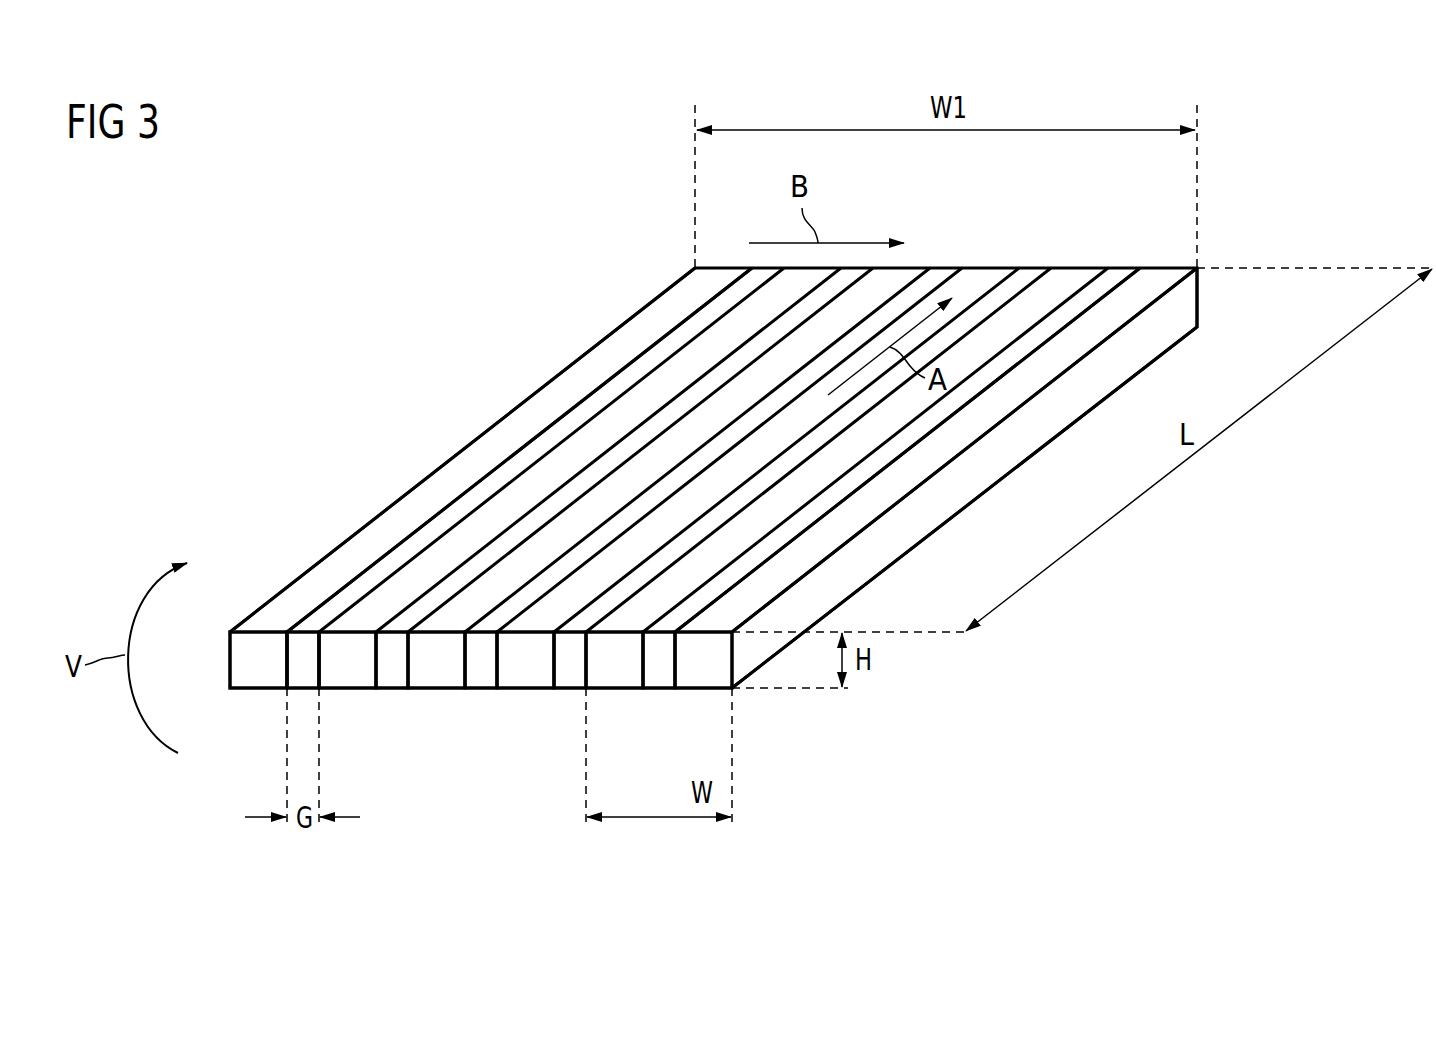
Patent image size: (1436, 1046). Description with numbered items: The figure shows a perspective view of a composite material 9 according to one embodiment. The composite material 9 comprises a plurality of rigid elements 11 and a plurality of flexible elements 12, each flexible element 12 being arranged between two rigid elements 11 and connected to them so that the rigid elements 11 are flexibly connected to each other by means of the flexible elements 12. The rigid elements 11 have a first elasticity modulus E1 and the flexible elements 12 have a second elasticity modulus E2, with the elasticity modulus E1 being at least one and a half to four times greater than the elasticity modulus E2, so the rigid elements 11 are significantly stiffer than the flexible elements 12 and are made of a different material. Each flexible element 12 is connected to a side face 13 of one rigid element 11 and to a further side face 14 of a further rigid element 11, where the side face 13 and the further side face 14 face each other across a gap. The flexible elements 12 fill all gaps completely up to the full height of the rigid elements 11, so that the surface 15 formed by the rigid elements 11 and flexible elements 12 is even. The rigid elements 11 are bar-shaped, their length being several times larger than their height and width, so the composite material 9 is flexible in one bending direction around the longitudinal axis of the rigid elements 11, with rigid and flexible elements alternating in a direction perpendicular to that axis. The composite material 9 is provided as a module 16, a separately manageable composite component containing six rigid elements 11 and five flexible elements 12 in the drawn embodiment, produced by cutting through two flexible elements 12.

The composite material 9 is at (955, 229).
The rigid element 11 is at (256, 673).
The flexible element 12 is at (304, 673).
The side face 13 is at (286, 650).
The further side face 14 is at (316, 649).
The surface 15 is at (853, 510).
The module 16 is at (1001, 482).
The first elasticity modulus E1 is at (517, 423).
The second elasticity modulus E2 is at (485, 488).